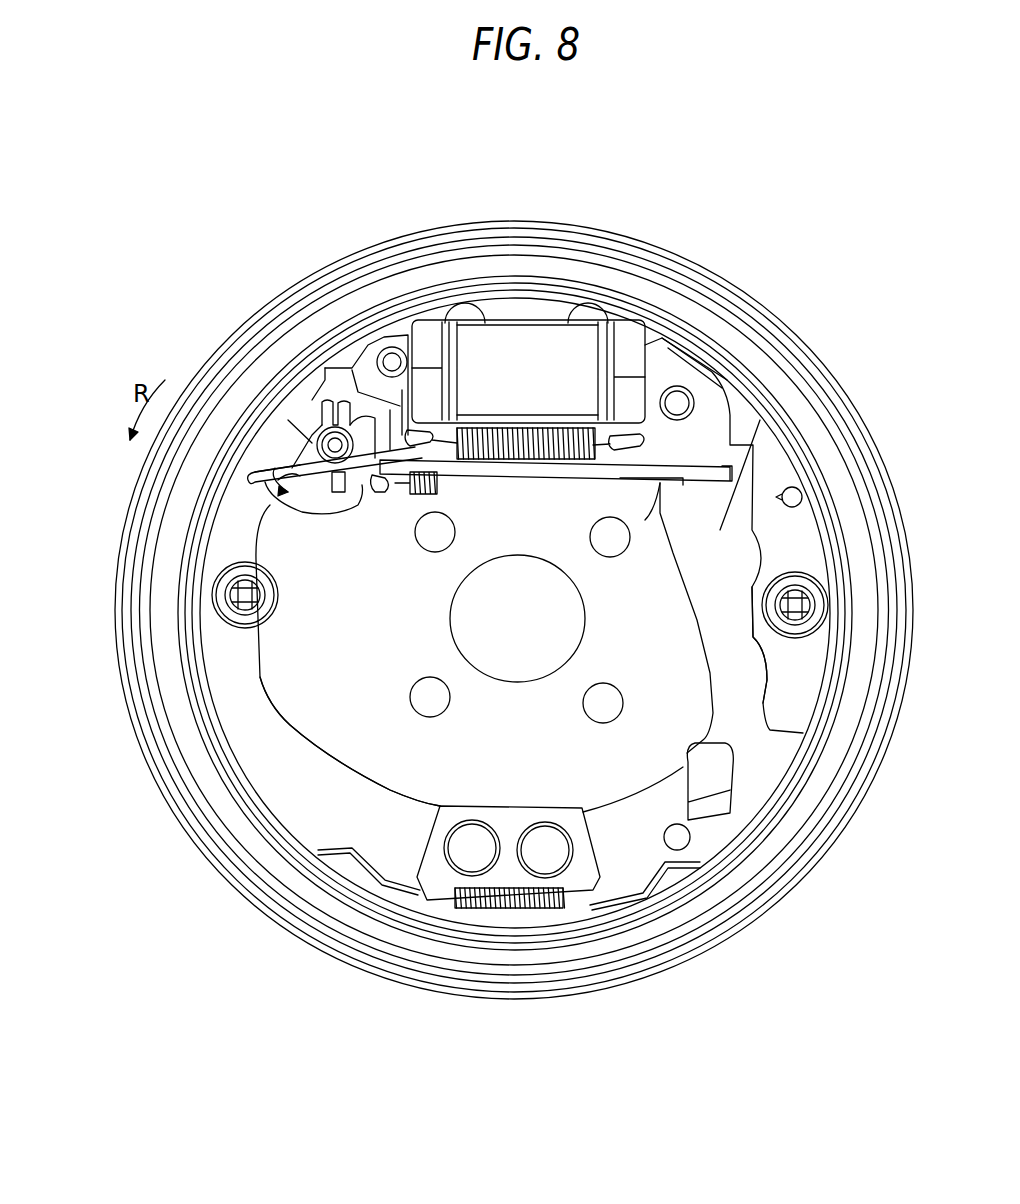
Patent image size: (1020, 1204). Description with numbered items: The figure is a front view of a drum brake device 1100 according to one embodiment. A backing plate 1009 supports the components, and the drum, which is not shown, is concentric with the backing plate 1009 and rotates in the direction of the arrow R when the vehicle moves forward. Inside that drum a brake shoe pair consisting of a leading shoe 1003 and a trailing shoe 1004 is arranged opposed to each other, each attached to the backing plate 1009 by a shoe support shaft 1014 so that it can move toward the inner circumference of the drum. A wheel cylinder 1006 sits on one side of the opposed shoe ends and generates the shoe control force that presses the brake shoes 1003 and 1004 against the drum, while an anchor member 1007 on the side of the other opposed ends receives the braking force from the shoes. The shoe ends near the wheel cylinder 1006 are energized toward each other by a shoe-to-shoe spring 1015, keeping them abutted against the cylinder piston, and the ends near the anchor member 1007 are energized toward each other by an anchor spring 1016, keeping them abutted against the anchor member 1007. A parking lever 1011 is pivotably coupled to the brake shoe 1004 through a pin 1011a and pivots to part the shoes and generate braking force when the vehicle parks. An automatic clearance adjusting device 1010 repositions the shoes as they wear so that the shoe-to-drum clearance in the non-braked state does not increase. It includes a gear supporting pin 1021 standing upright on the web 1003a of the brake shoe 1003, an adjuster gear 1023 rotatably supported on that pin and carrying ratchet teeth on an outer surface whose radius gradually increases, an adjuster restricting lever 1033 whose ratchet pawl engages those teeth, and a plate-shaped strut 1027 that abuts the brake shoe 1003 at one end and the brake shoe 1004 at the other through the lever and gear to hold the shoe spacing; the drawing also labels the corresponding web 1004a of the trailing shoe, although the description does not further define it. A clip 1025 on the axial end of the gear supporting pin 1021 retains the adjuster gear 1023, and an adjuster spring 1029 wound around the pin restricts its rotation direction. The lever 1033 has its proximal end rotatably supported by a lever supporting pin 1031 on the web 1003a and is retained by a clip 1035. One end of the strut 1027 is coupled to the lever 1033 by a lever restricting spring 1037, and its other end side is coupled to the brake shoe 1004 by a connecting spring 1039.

The drum brake device 1100 is at (228, 903).
The backing plate 1009 is at (540, 226).
The leading shoe 1003 is at (237, 500).
The web 1003a is at (258, 683).
The trailing shoe 1004 is at (842, 470).
The shoe web 1004a is at (787, 688).
The shoe support shaft 1014 is at (245, 600).
The wheel cylinder 1006 is at (502, 353).
The shoe-to-shoe spring 1015 is at (548, 400).
The gear supporting pin 1021 is at (358, 512).
The adjuster gear 1023 is at (325, 498).
The clip 1025 is at (333, 400).
The adjuster spring 1029 is at (287, 407).
The clip 1035 is at (390, 463).
The lever restricting spring 1037 is at (445, 495).
The connecting spring 1039 is at (653, 482).
The lever supporting pin 1031 is at (393, 397).
The adjuster restricting lever 1033 is at (388, 348).
The pin 1011a is at (665, 330).
The parking lever 1011 is at (807, 540).
The strut 1027 is at (718, 430).
The anchor member 1007 is at (518, 880).
The anchor spring 1016 is at (487, 905).
The automatic clearance adjusting device 1010 is at (276, 498).